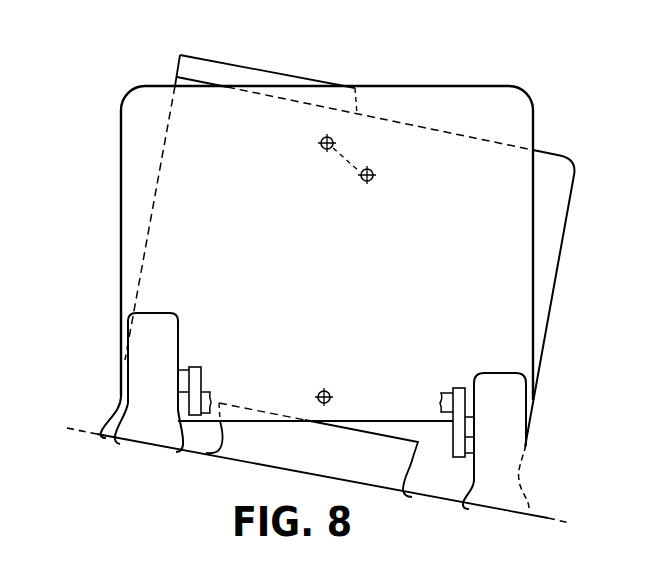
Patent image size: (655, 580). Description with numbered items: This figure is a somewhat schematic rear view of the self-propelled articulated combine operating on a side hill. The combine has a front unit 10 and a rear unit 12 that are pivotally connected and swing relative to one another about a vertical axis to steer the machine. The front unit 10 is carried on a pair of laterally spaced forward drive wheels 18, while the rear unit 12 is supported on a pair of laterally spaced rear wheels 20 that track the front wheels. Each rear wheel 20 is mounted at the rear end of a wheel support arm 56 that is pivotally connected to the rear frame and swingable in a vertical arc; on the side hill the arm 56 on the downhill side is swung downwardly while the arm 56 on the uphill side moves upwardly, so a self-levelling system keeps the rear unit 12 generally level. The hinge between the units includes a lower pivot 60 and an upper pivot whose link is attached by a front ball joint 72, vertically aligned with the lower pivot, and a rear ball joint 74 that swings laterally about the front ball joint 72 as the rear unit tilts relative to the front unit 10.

The front unit 10 is at (584, 167).
The rear unit 12 is at (532, 107).
The forward drive wheels 18 is at (410, 457).
The rear wheels 20 is at (528, 475).
The wheel support arms 56 is at (190, 402).
The lower pivot 60 is at (328, 392).
The ball joint 72 is at (373, 172).
The ball joint 74 is at (320, 150).